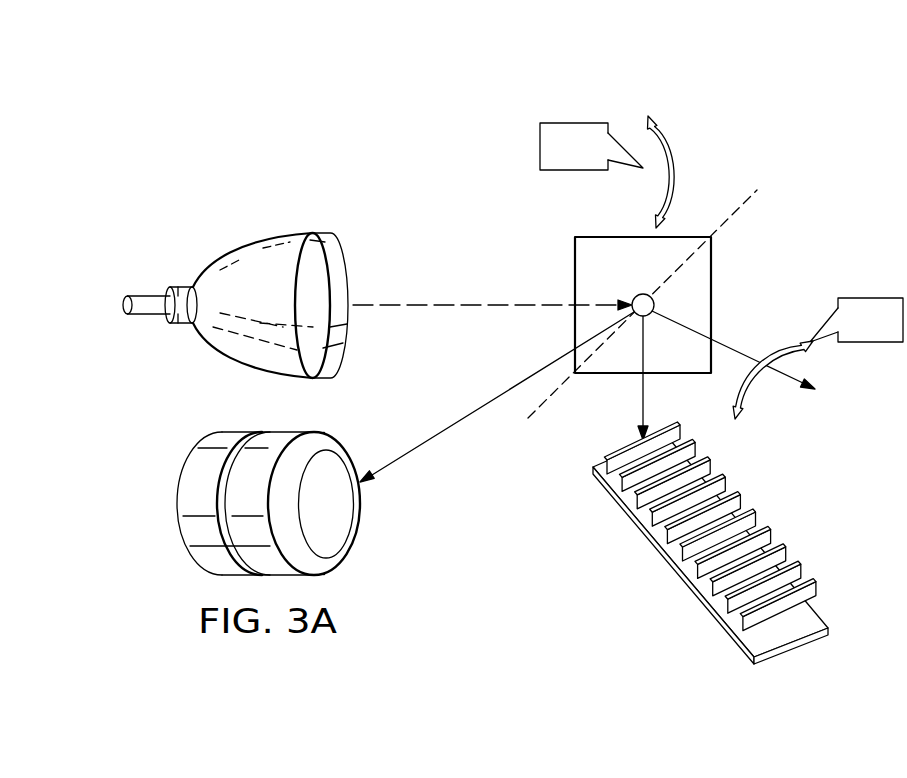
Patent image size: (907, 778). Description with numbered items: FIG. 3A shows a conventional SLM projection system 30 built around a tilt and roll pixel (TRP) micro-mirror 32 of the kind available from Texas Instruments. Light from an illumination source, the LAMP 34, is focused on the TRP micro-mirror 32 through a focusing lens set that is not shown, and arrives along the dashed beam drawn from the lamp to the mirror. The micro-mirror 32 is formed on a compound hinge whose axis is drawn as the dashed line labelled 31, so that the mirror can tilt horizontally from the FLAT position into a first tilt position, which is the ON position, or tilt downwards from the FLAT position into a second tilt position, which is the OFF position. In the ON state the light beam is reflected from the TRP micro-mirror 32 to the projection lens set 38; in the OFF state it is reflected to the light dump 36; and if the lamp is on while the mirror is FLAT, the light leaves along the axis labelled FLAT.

The SLM projection system 30 is at (330, 143).
The compound hinge axis 31 is at (722, 225).
The TRP micro-mirror 32 is at (574, 270).
The lamp 34 is at (232, 248).
The light dump 36 is at (793, 651).
The projection lens set 38 is at (178, 512).